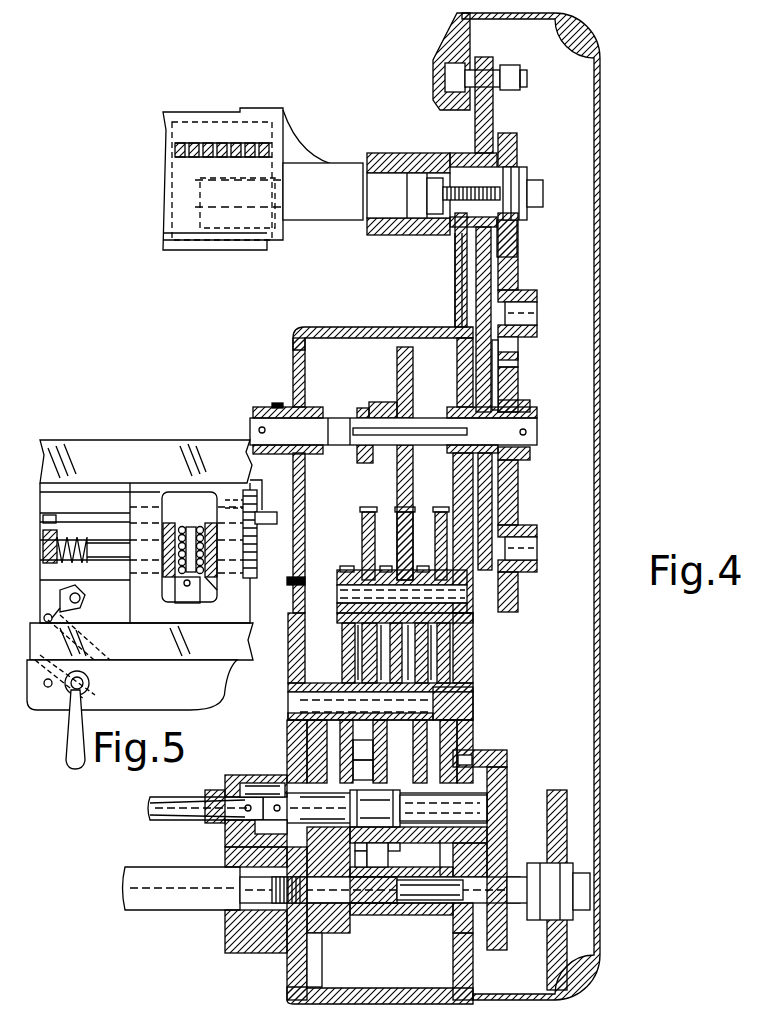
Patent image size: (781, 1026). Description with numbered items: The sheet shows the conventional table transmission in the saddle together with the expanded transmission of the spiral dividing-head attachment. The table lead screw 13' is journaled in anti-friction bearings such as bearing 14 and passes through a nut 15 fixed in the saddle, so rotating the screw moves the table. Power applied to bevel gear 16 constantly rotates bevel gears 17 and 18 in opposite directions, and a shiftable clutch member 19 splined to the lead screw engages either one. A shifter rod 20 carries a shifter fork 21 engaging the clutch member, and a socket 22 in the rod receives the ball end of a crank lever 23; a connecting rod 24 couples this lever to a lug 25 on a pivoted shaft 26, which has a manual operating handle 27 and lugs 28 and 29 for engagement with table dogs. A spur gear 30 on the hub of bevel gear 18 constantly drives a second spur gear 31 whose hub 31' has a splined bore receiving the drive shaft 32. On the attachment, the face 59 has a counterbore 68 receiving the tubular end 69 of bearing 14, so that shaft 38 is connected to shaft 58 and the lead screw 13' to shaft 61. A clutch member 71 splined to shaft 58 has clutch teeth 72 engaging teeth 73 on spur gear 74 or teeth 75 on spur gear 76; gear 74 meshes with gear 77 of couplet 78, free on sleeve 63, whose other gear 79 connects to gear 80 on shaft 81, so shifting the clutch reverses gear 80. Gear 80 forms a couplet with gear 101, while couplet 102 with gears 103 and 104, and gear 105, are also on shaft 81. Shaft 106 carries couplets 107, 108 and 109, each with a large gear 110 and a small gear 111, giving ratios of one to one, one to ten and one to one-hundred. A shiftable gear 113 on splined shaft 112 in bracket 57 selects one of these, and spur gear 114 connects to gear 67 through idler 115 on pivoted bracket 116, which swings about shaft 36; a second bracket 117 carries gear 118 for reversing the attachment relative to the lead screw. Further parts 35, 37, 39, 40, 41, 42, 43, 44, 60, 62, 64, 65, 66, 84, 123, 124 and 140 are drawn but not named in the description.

In FIG. 4, the lead screw 13' is at (182, 905).
In FIG. 5, the lead screw 13' is at (86, 542).
In FIG. 4, the anti-friction bearing 14 is at (248, 950).
In FIG. 5, the nut 15 is at (55, 517).
In FIG. 5, the bevel gear 16 is at (172, 520).
In FIG. 5, the bevel gear 17 is at (165, 535).
In FIG. 5, the bevel gear 18 is at (210, 565).
In FIG. 5, the shiftable clutch member 19 is at (200, 582).
In FIG. 5, the shifter rod 20 is at (118, 582).
In FIG. 5, the shifter fork 21 is at (180, 600).
In FIG. 5, the socket 22 is at (72, 587).
In FIG. 5, the crank lever 23 is at (55, 610).
In FIG. 5, the connecting rod 24 is at (80, 640).
In FIG. 5, the lug 25 is at (95, 680).
In FIG. 5, the pivoted shaft 26 is at (84, 690).
In FIG. 5, the manual operating handle 27 is at (72, 762).
In FIG. 5, the lug 28 is at (55, 700).
In FIG. 5, the lug 29 is at (90, 684).
In FIG. 5, the spur gear 30 is at (255, 578).
In FIG. 5, the second spur gear 31 is at (263, 484).
In FIG. 5, the hub 31' is at (233, 486).
In FIG. 4, the drive shaft 32 is at (160, 816).
In FIG. 5, the drive shaft 32 is at (268, 512).
In FIG. 4, the motor shaft 35 is at (353, 163).
In FIG. 4, the shaft 36 is at (388, 178).
In FIG. 4, the coupling shaft 37 is at (438, 185).
In FIG. 4, the shaft 38 is at (235, 775).
In FIG. 4, the shaft 39 is at (192, 799).
In FIG. 4, the bearing 40 is at (253, 775).
In FIG. 4, the flange 41 is at (213, 823).
In FIG. 4, the bearing cap 42 is at (225, 947).
In FIG. 4, the bushing 43 is at (270, 783).
In FIG. 4, the wall 44 is at (313, 950).
In FIG. 4, the bracket 57 is at (293, 345).
In FIG. 4, the shaft 58 is at (300, 770).
In FIG. 4, the face 59 is at (288, 673).
In FIG. 4, the bushing 60 is at (290, 790).
In FIG. 4, the shaft 61 is at (450, 915).
In FIG. 4, the shaft slot 62 is at (406, 905).
In FIG. 4, the sleeve 63 is at (356, 905).
In FIG. 4, the bearing 64 is at (432, 925).
In FIG. 4, the spring 65 is at (450, 185).
In FIG. 4, the nut 66 is at (520, 168).
In FIG. 4, the gear 67 is at (512, 133).
In FIG. 4, the counterbore 68 is at (290, 975).
In FIG. 4, the tubular end 69 is at (280, 952).
In FIG. 4, the shiftable clutch member 71 is at (378, 850).
In FIG. 4, the clutch teeth 72 is at (360, 845).
In FIG. 4, the clutch teeth 73 is at (356, 855).
In FIG. 4, the spur gear 74 is at (328, 790).
In FIG. 4, the clutch teeth 75 is at (403, 790).
In FIG. 4, the spur gear 76 is at (445, 795).
In FIG. 4, the gear 77 is at (330, 935).
In FIG. 4, the couplet 78 is at (383, 917).
In FIG. 4, the gear 79 is at (440, 845).
In FIG. 4, the gear 80 is at (428, 752).
In FIG. 4, the shaft 81 is at (470, 702).
In FIG. 4, the housing bottom 84 is at (320, 1004).
In FIG. 4, the gear 101 is at (414, 760).
In FIG. 4, the gear couplet 102 is at (368, 754).
In FIG. 4, the gear 103 is at (378, 790).
In FIG. 4, the gear 104 is at (361, 751).
In FIG. 4, the gear 105 is at (338, 755).
In FIG. 4, the shaft 106 is at (340, 576).
In FIG. 4, the couplet 107 is at (436, 550).
In FIG. 4, the couplet 108 is at (398, 548).
In FIG. 4, the couplet 109 is at (362, 545).
In FIG. 4, the large gear 110 is at (370, 510).
In FIG. 4, the small gear 111 is at (346, 566).
In FIG. 4, the splined shaft 112 is at (328, 445).
In FIG. 4, the shiftable gear 113 is at (413, 380).
In FIG. 4, the spur gear 114 is at (518, 390).
In FIG. 4, the idler 115 is at (510, 357).
In FIG. 4, the pivoted bracket 116 is at (492, 118).
In FIG. 4, the second bracket 117 is at (483, 408).
In FIG. 4, the gear 118 is at (518, 522).
In FIG. 4, the hub 123 is at (365, 405).
In FIG. 4, the hub 124 is at (382, 402).
In FIG. 4, the plate 140 is at (556, 790).